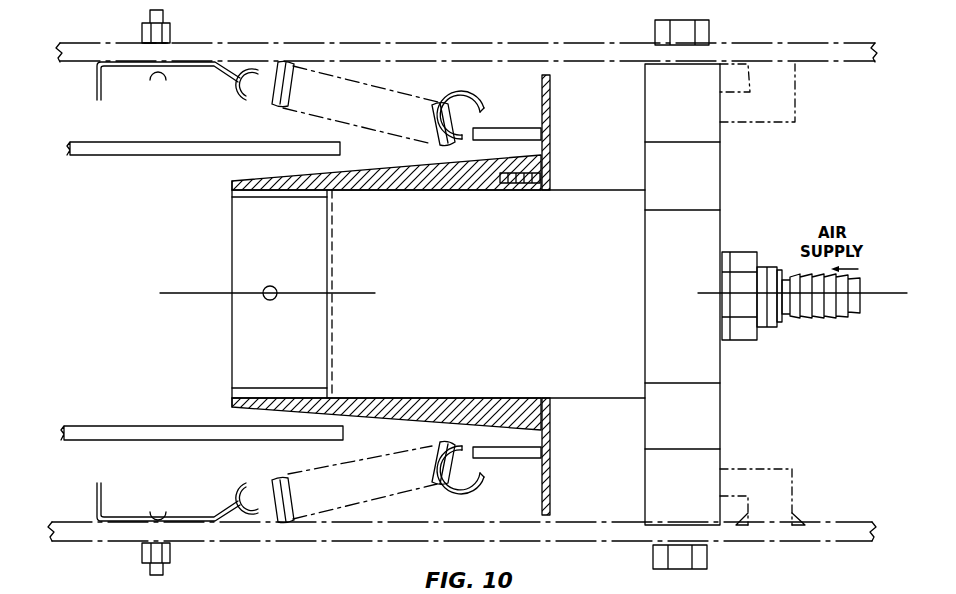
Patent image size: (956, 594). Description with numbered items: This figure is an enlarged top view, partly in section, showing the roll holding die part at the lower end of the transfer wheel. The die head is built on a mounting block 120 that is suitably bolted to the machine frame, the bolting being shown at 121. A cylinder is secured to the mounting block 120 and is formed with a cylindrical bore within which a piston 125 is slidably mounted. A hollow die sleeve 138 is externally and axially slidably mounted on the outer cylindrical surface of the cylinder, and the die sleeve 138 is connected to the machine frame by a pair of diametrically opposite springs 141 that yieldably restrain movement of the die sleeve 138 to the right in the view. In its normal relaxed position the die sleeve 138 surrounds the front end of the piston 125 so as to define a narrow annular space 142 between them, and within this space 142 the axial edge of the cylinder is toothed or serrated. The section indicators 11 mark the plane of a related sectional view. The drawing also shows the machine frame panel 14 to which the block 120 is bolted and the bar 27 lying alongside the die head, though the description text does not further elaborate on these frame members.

The panel 14 is at (748, 542).
The bar 27 is at (172, 140).
The springs 141 is at (452, 104).
The piston 125 is at (247, 357).
The annular space 142 is at (235, 393).
The die sleeve 138 is at (426, 421).
The mounting block 120 is at (703, 467).
The bolt 121 is at (680, 566).
The section line 11- 11 is at (166, 265).